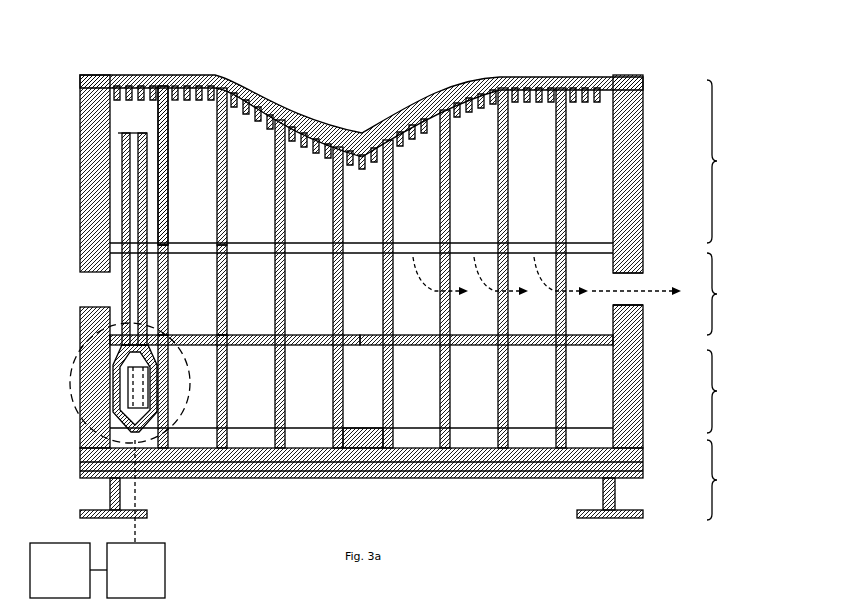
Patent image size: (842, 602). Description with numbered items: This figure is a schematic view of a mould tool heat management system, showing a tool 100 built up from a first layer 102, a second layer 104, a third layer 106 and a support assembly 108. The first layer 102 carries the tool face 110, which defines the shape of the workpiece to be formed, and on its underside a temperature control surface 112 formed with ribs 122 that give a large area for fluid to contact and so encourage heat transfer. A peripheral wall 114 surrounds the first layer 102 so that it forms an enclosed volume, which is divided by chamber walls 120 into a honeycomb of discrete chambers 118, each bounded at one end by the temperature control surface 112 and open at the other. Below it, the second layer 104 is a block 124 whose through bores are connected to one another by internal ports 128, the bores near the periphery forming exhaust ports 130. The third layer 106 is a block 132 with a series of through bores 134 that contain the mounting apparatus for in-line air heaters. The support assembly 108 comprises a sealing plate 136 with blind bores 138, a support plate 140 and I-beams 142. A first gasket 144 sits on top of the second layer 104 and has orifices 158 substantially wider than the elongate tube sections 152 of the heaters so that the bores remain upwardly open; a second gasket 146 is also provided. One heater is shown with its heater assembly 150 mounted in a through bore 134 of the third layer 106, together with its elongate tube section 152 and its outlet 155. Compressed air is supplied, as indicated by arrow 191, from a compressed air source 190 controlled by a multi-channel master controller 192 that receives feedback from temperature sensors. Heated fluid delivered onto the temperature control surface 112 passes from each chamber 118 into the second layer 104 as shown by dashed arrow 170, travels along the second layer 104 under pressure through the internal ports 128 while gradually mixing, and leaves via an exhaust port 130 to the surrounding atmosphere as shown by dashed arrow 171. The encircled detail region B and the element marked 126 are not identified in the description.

The tool 100 is at (108, 30).
The first layer 102 is at (723, 161).
The second layer 104 is at (723, 294).
The third layer 106 is at (723, 391).
The support assembly 108 is at (723, 480).
The tool face 110 is at (361, 116).
The temperature control surface 112 is at (357, 132).
The peripheral wall 114 is at (658, 174).
The chambers 118 is at (183, 165).
The chamber walls 120 is at (227, 184).
The ribs 122 is at (193, 110).
The block 124 is at (658, 283).
The middle chamber 126 is at (180, 290).
The internal ports 128 is at (227, 292).
The exhaust ports 130 is at (607, 317).
The block 132 is at (658, 376).
The through bores 134 is at (239, 391).
The sealing plate 136 is at (235, 329).
The blind bores 138 is at (406, 439).
The support plate 140 is at (135, 58).
The I-beams 142 is at (391, 498).
The first gasket 144 is at (406, 250).
The second gasket 146 is at (531, 343).
The heater assembly 150 is at (93, 388).
The elongate tube section 152 is at (87, 239).
The outlet 155 is at (87, 124).
The orifices 158 is at (361, 265).
The dashed arrow 170 is at (500, 249).
The dashed arrow 171 is at (627, 283).
The compressed air source 190 is at (136, 570).
The arrow 191 is at (169, 491).
The multi-channel master controller 192 is at (68, 570).
The detail region B is at (115, 383).